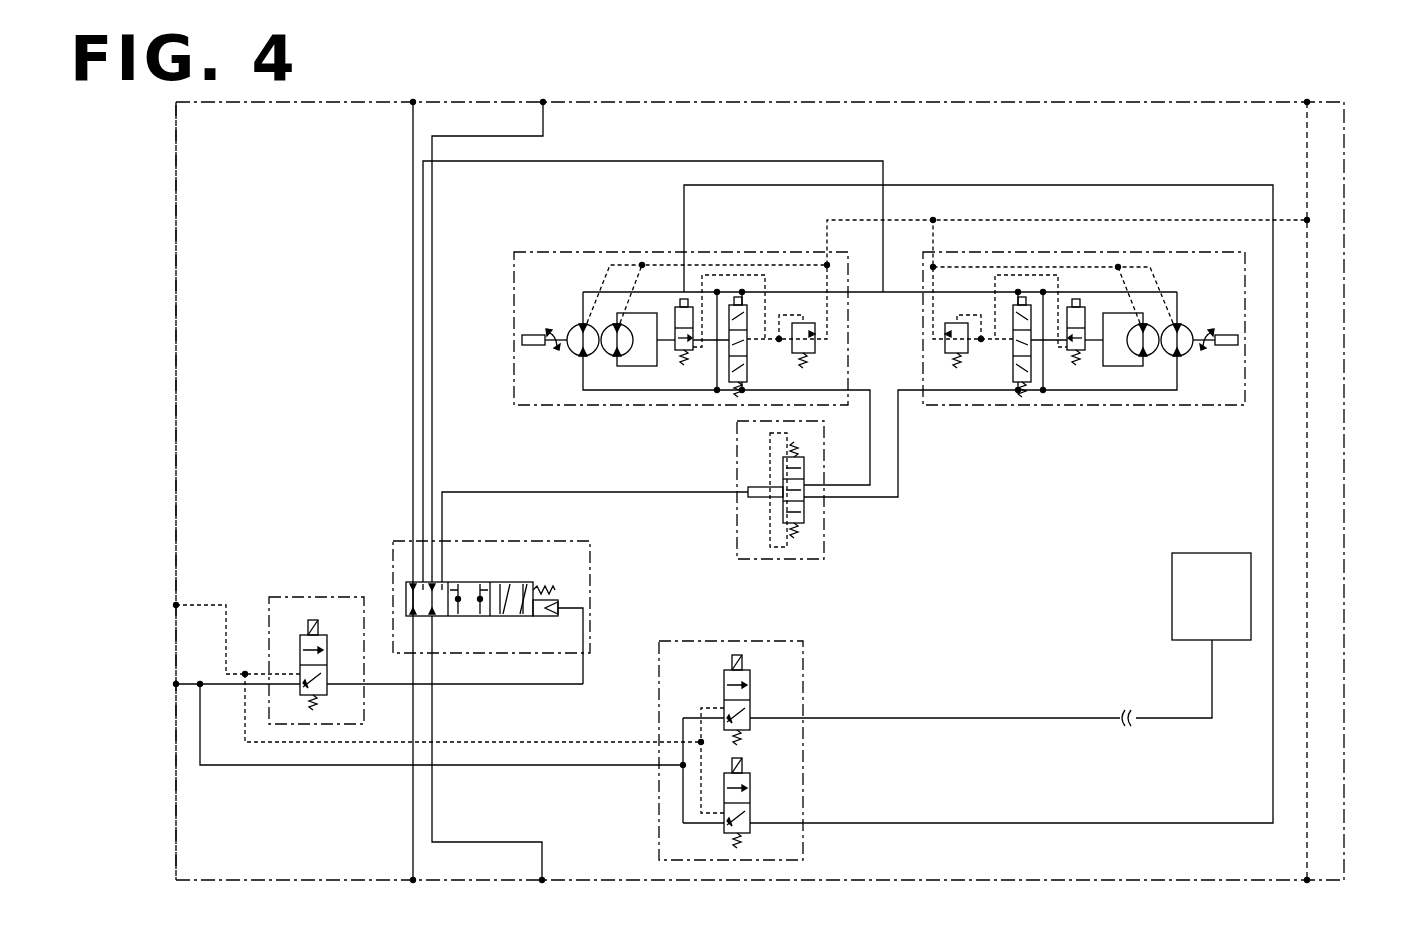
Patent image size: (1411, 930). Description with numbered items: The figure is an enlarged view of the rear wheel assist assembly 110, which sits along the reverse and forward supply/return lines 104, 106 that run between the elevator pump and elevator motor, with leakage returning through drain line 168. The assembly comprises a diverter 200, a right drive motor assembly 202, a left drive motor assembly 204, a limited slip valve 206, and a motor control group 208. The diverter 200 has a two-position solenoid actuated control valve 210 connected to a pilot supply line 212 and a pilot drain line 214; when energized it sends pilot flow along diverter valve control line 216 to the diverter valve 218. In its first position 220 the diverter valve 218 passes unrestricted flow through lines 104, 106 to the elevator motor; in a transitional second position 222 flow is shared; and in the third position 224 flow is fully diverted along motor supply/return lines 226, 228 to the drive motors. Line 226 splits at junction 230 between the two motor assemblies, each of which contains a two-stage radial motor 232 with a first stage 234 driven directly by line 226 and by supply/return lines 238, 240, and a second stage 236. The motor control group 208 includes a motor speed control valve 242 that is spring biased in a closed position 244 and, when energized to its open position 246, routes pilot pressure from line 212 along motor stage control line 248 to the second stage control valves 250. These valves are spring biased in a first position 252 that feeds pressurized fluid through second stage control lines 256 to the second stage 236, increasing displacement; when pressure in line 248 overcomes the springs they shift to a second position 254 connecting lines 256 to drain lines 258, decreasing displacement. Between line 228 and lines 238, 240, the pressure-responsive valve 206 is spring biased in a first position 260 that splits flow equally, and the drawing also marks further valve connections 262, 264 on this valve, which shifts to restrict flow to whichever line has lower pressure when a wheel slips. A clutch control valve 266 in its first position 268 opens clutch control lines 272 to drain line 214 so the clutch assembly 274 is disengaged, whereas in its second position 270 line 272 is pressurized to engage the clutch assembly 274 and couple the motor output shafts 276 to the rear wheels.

The reverse supply/return line 104 is at (413, 190).
The forward supply/return line 106 is at (423, 195).
The rear wheel assist assembly 110 is at (176, 340).
The drain line 168 is at (1307, 118).
The diverter 200 is at (325, 480).
The right drive motor assembly 202 is at (1240, 252).
The left drive motor assembly 204 is at (514, 262).
The limited slip valve 206 is at (808, 528).
The motor control group 208 is at (803, 650).
The control valve 210 is at (305, 633).
The pilot supply line 212 is at (193, 690).
The pilot drain line 214 is at (200, 603).
The diverter valve control line 216 is at (583, 692).
The diverter valve 218 is at (400, 582).
The first position 220 is at (432, 648).
The second position 222 is at (465, 616).
The third position 224 is at (525, 582).
The motor supply/return line 226 is at (712, 161).
The motor supply/return line 228 is at (620, 494).
The junction 230 is at (883, 300).
The two-stage radial motor 232 is at (581, 305).
The first stage 234 is at (577, 322).
The second stage 236 is at (615, 322).
The supply/return line 238 is at (830, 405).
The supply/return line 240 is at (898, 415).
The motor speed control valve 242 is at (750, 775).
The closed position 244 is at (750, 834).
The open position 246 is at (750, 790).
The motor stage control line 248 is at (895, 185).
The second stage control valve 250 is at (683, 352).
The first position 252 is at (740, 385).
The second position 254 is at (690, 305).
The second stage control line 256 is at (647, 313).
The drain line 258 is at (765, 275).
The first position 260 is at (898, 500).
The first inlet 262 is at (870, 482).
The outlet 264 is at (806, 512).
The clutch control valve 266 is at (748, 668).
The first position 268 is at (750, 705).
The second position 270 is at (724, 662).
The clutch control line 272 is at (1072, 718).
The clutch assembly 274 is at (1211, 596).
The motor output shaft 276 is at (528, 338).